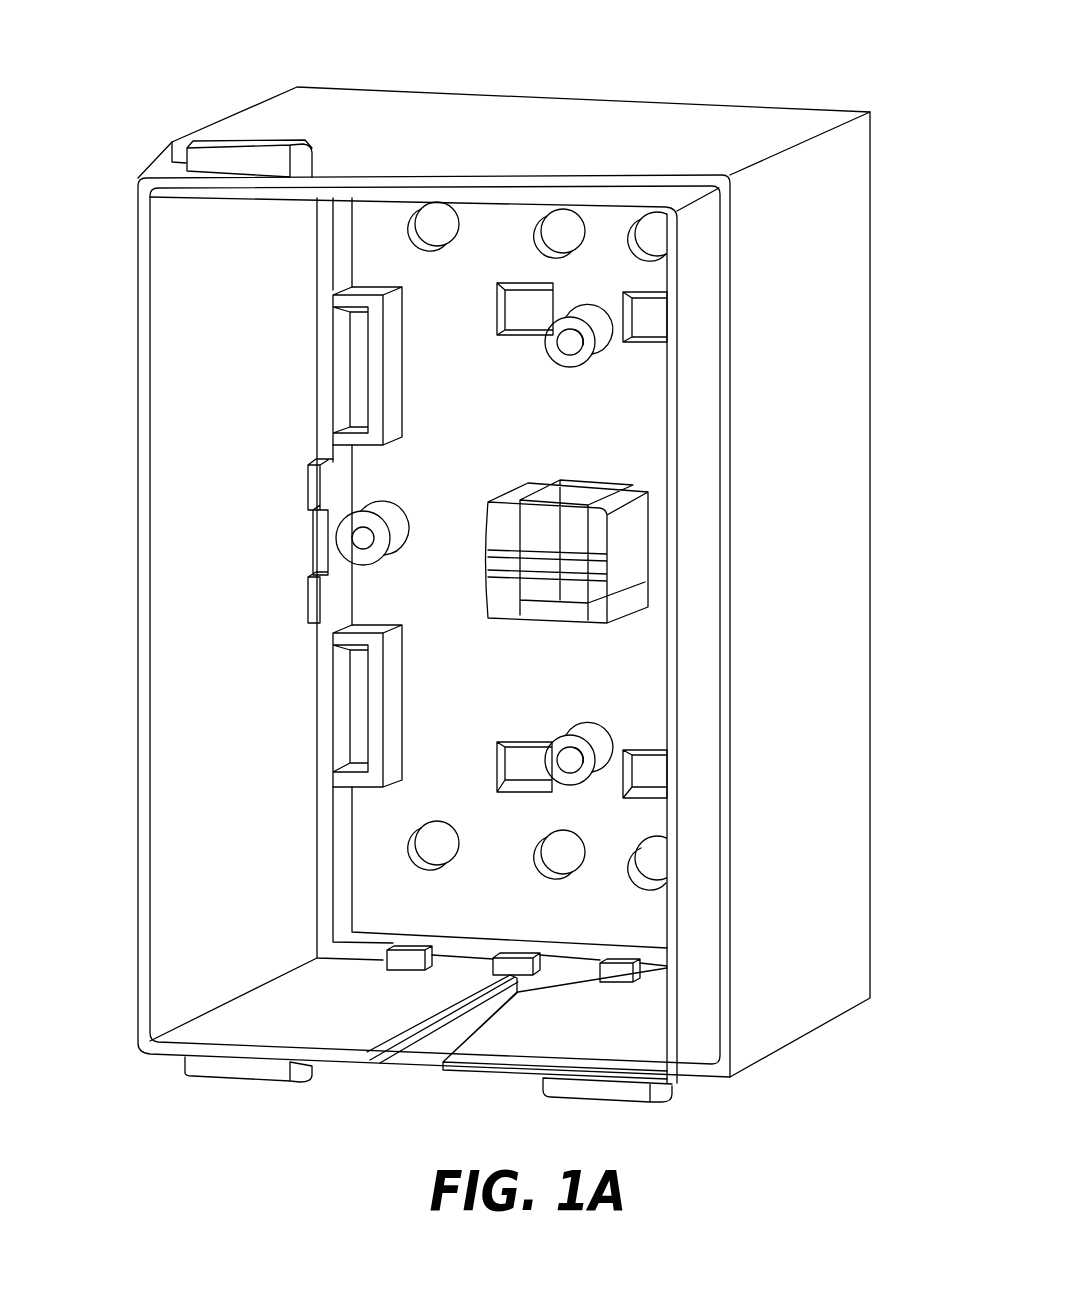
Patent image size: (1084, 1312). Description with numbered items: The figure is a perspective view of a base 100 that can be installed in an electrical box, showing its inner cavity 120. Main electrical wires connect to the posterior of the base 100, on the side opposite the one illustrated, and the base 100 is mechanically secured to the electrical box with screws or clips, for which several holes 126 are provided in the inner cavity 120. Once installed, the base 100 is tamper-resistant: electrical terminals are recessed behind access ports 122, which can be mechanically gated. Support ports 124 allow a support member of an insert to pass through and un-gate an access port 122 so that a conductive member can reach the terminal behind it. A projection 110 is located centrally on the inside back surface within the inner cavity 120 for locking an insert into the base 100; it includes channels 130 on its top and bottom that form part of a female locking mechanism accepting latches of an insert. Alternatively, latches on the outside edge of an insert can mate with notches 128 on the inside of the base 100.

The base 100 is at (502, 554).
The projection 110 is at (625, 562).
The inner cavity 120 is at (205, 697).
The access ports 122 is at (440, 215).
The support ports 124 is at (655, 318).
The holes 126 is at (577, 338).
The notches 128 is at (360, 362).
The channels 130 is at (712, 514).